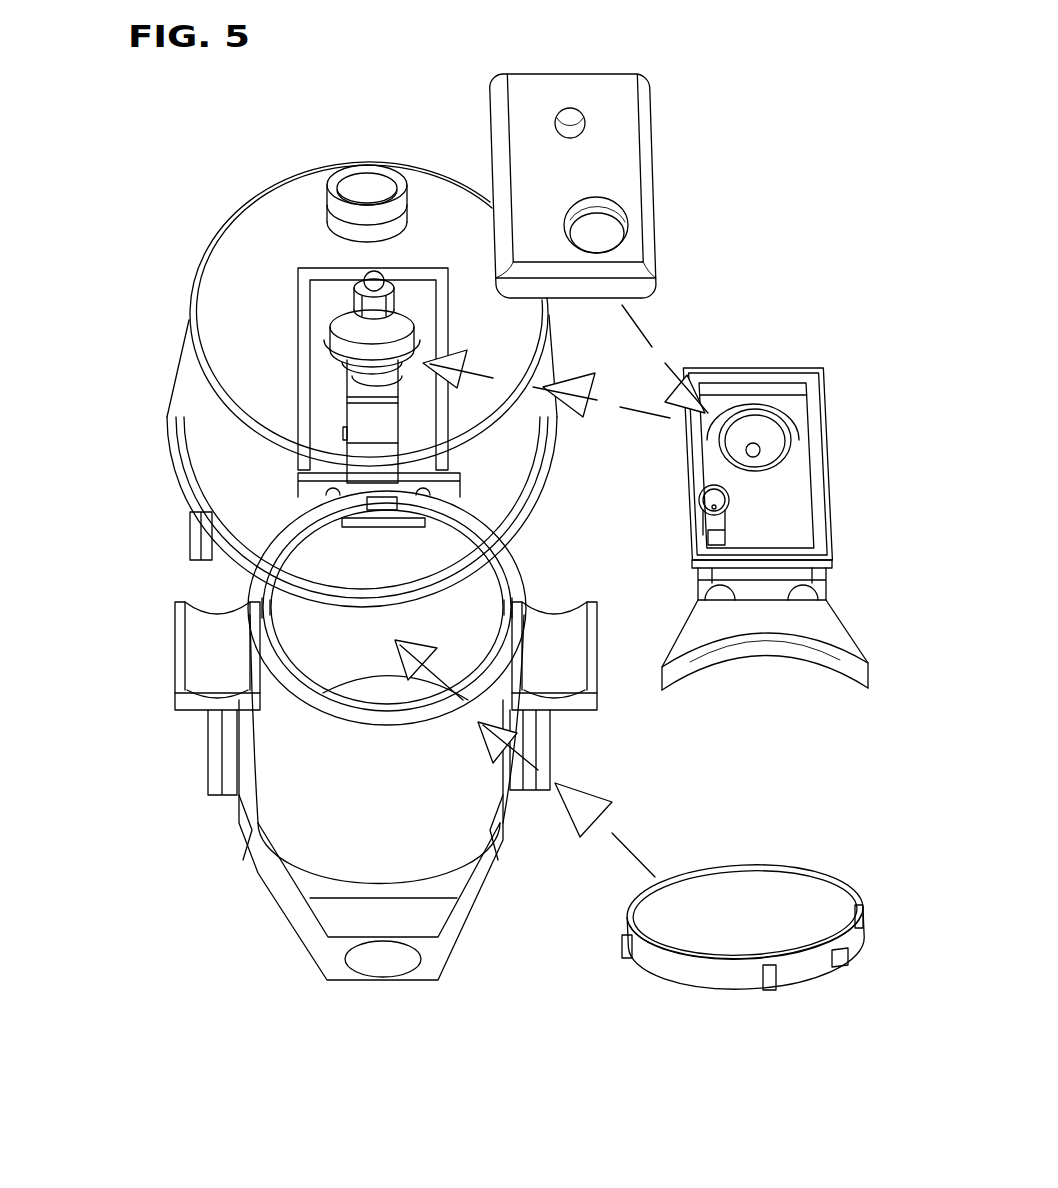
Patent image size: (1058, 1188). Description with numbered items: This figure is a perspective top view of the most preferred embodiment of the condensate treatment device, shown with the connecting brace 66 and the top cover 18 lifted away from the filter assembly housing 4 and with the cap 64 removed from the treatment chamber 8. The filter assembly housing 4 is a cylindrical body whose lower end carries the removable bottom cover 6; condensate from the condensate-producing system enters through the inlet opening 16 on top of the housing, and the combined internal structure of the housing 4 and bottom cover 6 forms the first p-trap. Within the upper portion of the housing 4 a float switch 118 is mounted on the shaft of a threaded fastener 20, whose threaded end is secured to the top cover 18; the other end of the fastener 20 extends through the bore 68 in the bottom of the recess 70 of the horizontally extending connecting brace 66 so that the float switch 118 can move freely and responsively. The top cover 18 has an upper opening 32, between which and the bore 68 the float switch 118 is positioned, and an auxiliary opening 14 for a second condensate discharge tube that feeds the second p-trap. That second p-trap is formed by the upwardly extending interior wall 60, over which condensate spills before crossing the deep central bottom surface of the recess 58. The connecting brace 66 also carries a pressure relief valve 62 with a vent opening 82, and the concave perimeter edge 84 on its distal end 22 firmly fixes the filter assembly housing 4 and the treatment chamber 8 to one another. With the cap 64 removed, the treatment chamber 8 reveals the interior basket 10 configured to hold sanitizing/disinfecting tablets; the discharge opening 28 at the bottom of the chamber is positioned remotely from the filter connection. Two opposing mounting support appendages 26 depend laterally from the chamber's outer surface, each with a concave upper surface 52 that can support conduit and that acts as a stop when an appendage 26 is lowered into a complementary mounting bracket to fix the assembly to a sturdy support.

The filter assembly housing 4 is at (203, 382).
The bottom cover 6 is at (200, 498).
The treatment chamber 8 is at (463, 813).
The interior basket 10 is at (330, 602).
The auxiliary opening 14 is at (612, 232).
The inlet opening 16 is at (366, 183).
The top cover 18 is at (618, 155).
The threaded fastener 20 is at (362, 278).
The distal end 22 is at (827, 613).
The mounting support appendages 26 is at (220, 753).
The discharge opening 28 is at (390, 968).
The upper opening 32 is at (570, 110).
The concave upper surface 52 is at (225, 660).
The recess 58 is at (333, 412).
The upwardly extending interior wall 60 is at (365, 417).
The pressure relief valve 62 is at (707, 515).
The cap 64 is at (782, 915).
The connecting brace 66 is at (833, 505).
The bore 68 is at (757, 453).
The recess 70 is at (748, 425).
The vent opening 82 is at (720, 515).
The concave perimeter edge 84 is at (739, 660).
The float switch 118 is at (350, 320).